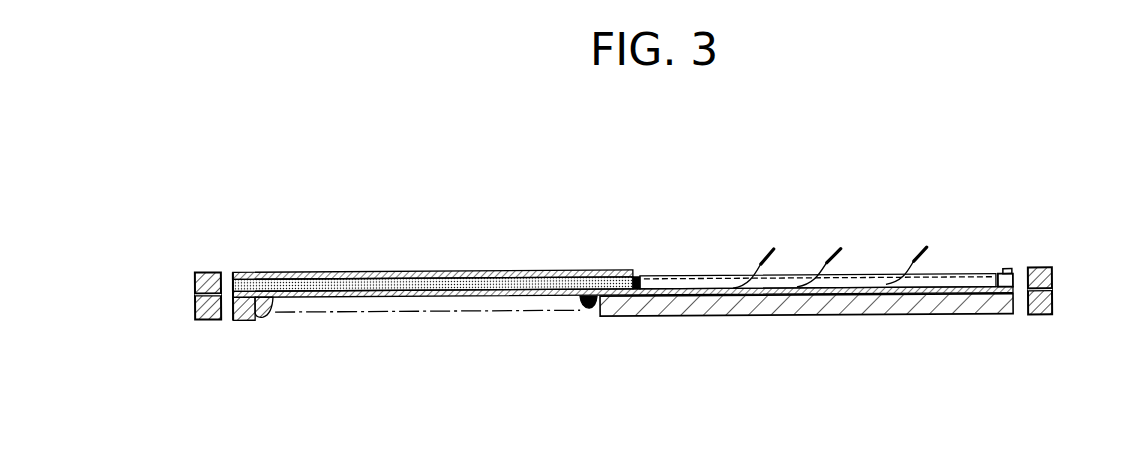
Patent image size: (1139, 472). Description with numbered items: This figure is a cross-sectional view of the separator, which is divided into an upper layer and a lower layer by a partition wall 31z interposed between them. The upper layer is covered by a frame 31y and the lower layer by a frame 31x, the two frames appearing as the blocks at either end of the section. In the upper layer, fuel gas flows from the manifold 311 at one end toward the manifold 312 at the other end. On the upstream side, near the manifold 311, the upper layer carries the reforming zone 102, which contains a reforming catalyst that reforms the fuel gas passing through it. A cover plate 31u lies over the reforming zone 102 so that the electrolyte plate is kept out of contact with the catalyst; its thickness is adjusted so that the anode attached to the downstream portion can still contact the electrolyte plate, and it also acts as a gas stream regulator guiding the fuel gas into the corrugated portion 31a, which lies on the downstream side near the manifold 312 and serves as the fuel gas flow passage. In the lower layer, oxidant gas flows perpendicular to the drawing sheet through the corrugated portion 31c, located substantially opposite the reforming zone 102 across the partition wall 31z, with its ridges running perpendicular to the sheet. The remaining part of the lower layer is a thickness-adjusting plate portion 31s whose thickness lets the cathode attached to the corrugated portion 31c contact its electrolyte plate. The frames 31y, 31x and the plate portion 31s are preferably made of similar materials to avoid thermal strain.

The reforming zone 102 is at (362, 275).
The manifold 311 is at (228, 278).
The manifold 312 is at (1021, 270).
The corrugated portion 31a is at (713, 275).
The corrugated portion 31c is at (260, 313).
The thickness-adjusting plate portion 31s is at (840, 318).
The cover plate 31u is at (482, 271).
The frame 31x is at (198, 318).
The frame 31y is at (196, 275).
The partition wall 31z is at (195, 294).